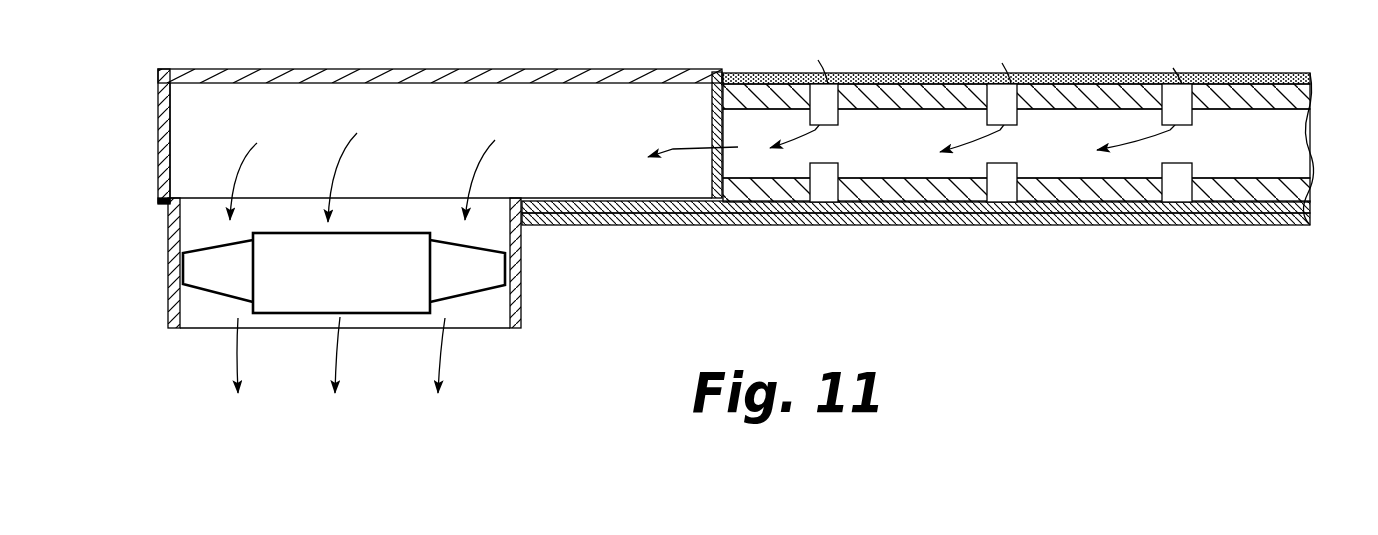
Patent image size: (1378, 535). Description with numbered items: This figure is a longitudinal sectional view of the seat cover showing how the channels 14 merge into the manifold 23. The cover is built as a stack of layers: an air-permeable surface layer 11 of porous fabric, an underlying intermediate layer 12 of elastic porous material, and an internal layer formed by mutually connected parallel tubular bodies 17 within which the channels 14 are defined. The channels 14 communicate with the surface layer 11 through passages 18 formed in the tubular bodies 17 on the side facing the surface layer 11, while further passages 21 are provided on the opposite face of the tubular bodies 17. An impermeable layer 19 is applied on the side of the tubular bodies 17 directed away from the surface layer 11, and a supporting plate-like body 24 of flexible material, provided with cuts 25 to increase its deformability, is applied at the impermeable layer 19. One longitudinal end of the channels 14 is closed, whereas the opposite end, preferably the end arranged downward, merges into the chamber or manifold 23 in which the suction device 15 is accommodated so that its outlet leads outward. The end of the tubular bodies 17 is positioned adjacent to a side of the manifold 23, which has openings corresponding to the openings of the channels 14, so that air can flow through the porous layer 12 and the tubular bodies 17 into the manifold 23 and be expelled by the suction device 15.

The surface layer 11 is at (942, 152).
The intermediate layer 12 is at (1133, 72).
The channels 14 is at (1282, 133).
The suction device 15 is at (168, 258).
The tubular bodies 17 is at (880, 92).
The passages 18 is at (1013, 115).
The impermeable layer 19 is at (1275, 227).
The passages 21 is at (1000, 190).
The manifold 23 is at (645, 72).
The supporting plate-like body 24 is at (1163, 220).
The cuts 25 is at (790, 217).